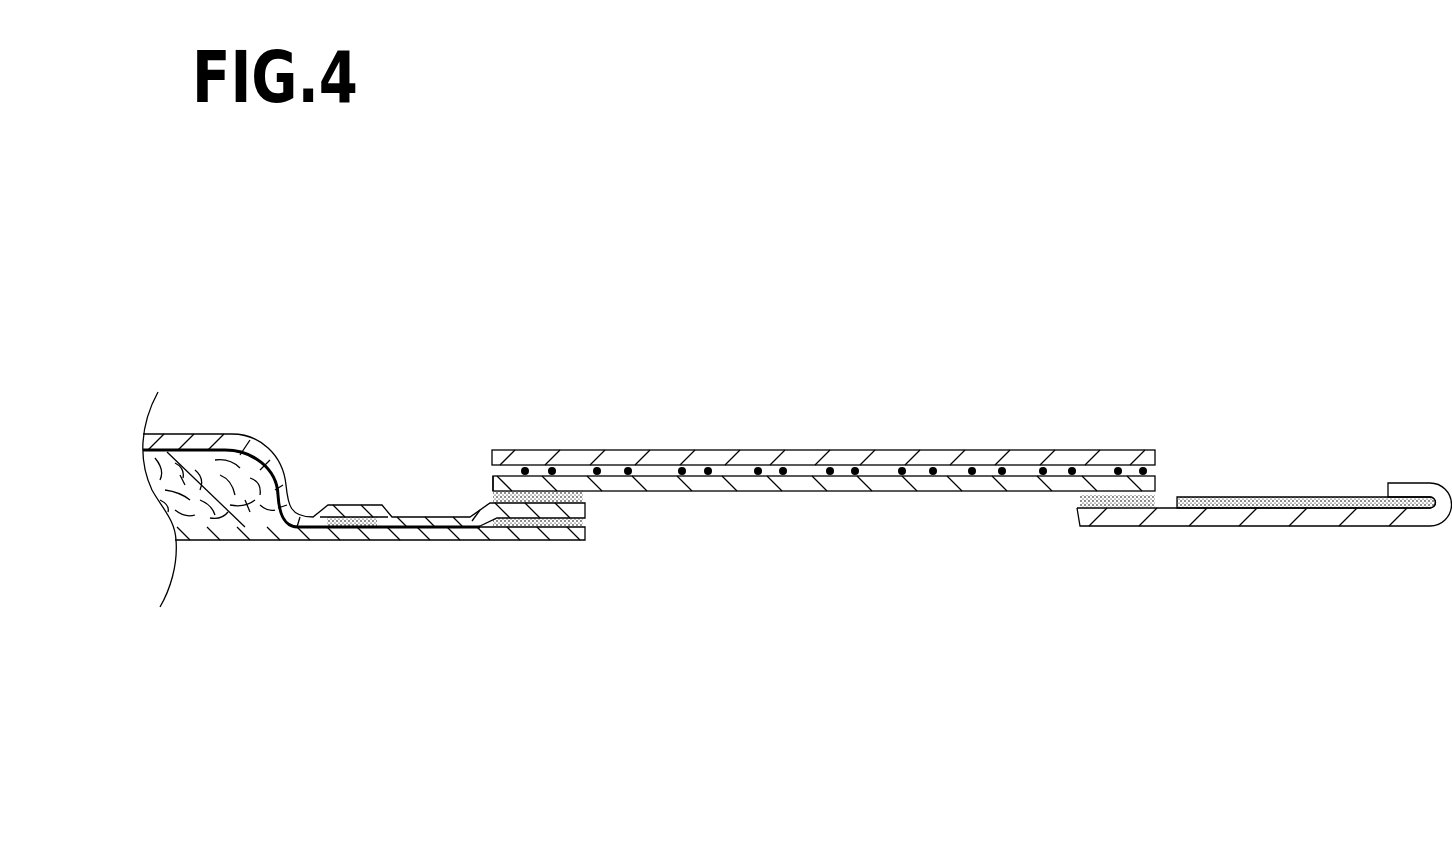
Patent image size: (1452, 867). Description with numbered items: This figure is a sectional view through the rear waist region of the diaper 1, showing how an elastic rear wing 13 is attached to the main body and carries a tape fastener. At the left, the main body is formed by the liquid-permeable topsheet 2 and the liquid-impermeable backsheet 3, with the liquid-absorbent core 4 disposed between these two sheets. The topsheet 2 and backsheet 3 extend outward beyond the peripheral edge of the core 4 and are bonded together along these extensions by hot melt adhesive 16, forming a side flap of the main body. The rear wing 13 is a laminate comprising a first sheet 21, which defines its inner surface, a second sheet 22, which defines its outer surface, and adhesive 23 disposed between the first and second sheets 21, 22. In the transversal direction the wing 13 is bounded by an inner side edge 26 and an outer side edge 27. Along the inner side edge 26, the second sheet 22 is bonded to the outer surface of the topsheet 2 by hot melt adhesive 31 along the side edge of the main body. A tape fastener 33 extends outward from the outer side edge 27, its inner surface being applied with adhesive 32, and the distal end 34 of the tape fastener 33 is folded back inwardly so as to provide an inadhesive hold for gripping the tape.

The diaper 1 is at (687, 223).
The liquid-permeable topsheet 2 is at (212, 442).
The liquid-impermeable backsheet 3 is at (255, 533).
The liquid-absorbent core 4 is at (218, 513).
The rear wing 13 is at (817, 448).
The hot melt adhesive 16 is at (370, 530).
The first sheet 21 is at (1028, 448).
The second sheet 22 is at (973, 495).
The adhesive 23 is at (840, 476).
The inner side edge 26 is at (530, 453).
The outer side edge 27 is at (1125, 458).
The hot melt adhesive 31 is at (495, 483).
The adhesive 32 is at (1265, 502).
The tape fastener 33 is at (1320, 528).
The distal end 34 is at (1413, 487).